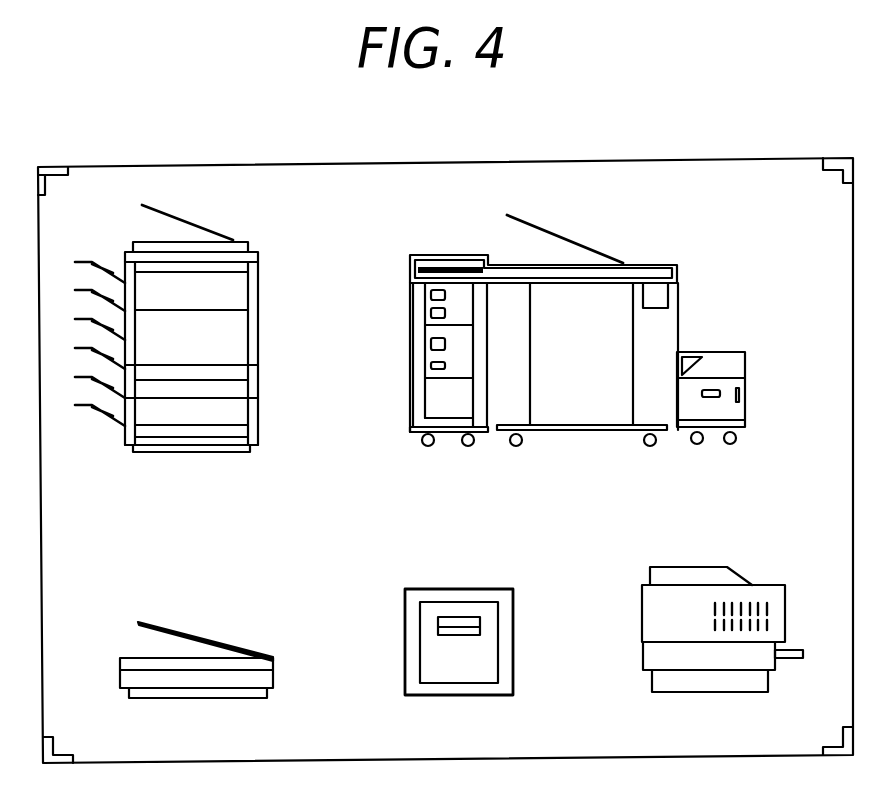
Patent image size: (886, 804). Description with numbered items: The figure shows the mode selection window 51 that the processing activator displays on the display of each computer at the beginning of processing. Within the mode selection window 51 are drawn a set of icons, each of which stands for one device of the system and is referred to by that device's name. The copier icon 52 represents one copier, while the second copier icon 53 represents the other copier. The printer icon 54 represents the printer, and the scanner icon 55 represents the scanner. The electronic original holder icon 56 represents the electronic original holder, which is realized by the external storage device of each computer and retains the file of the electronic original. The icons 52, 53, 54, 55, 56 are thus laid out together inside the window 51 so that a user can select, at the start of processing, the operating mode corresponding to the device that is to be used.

The mode selection window 51 is at (710, 158).
The copier icon 52 is at (200, 452).
The copier icon 53 is at (623, 428).
The printer icon 54 is at (747, 578).
The scanner icon 55 is at (225, 642).
The electronic original holder icon 56 is at (475, 589).